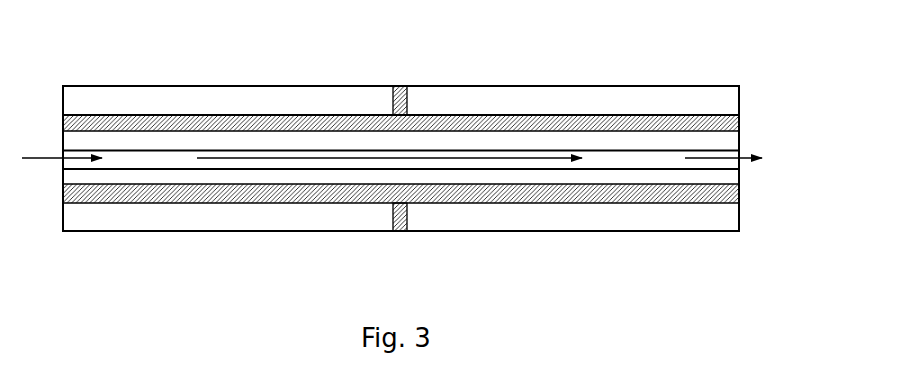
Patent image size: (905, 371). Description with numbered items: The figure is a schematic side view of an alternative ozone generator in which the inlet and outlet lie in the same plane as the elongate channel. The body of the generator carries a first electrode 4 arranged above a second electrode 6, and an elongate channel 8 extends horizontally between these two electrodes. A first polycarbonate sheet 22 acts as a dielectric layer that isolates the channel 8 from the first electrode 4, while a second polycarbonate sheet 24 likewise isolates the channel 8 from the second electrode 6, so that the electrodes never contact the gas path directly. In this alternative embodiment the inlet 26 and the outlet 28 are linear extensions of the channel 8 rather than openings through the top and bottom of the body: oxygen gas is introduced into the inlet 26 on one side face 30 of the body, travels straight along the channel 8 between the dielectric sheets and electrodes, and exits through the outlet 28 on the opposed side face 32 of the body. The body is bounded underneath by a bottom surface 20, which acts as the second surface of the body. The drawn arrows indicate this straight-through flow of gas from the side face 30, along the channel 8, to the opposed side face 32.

The first electrode 4 is at (585, 122).
The second electrode 6 is at (522, 201).
The channel 8 is at (442, 155).
The bottom surface 20 is at (623, 232).
The first polycarbonate sheet 22 is at (290, 140).
The second polycarbonate sheet 24 is at (320, 175).
The inlet 26 is at (63, 162).
The outlet 28 is at (737, 154).
The side face 30 is at (63, 110).
The opposed side face 32 is at (738, 175).